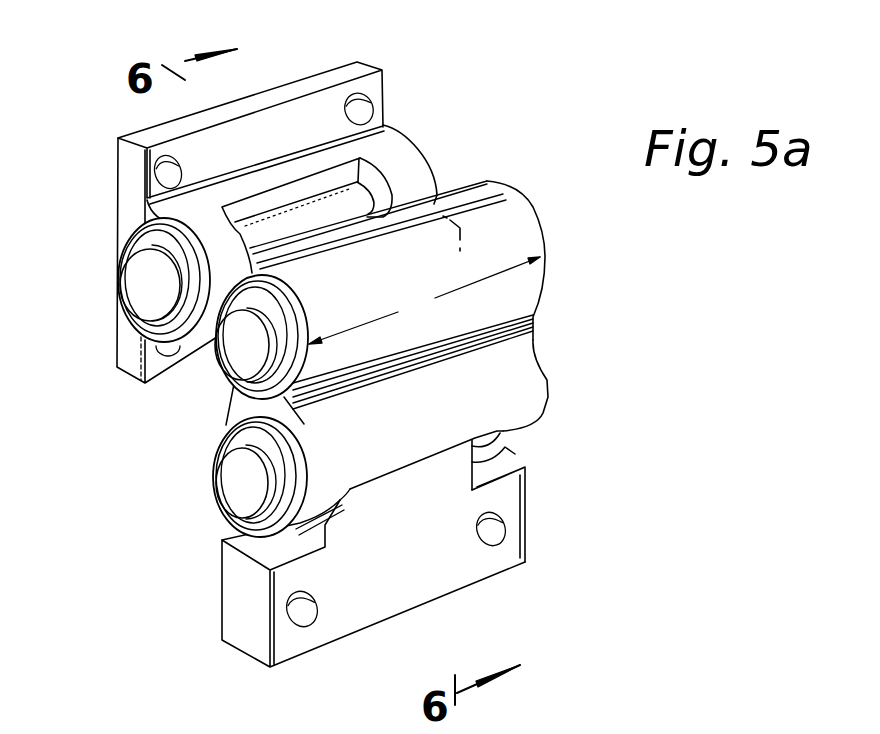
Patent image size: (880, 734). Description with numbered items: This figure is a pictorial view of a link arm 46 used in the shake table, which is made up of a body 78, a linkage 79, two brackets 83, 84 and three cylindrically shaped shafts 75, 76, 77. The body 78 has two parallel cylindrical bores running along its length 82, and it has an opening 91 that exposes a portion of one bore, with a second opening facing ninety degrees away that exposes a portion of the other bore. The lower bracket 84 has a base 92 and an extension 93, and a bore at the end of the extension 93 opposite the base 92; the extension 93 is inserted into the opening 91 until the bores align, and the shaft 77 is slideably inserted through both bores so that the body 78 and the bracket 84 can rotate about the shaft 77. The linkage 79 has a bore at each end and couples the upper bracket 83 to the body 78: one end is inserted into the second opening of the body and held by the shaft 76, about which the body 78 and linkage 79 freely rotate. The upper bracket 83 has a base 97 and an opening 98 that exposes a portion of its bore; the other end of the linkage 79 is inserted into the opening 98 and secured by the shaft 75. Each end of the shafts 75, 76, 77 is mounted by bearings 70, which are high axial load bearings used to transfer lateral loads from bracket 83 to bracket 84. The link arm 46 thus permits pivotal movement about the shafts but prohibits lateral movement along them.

The link arm 46 is at (522, 198).
The bearings 70 is at (157, 232).
The shaft 75 is at (135, 280).
The shaft 76 is at (233, 360).
The shaft 77 is at (237, 488).
The body 78 is at (540, 222).
The linkage 79 is at (380, 214).
The length 82 is at (424, 300).
The bracket 83 is at (327, 70).
The bracket 84 is at (394, 617).
The opening 91 is at (400, 470).
The base 92 is at (528, 523).
The extension 93 is at (492, 459).
The base 97 is at (125, 159).
The opening 98 is at (370, 188).